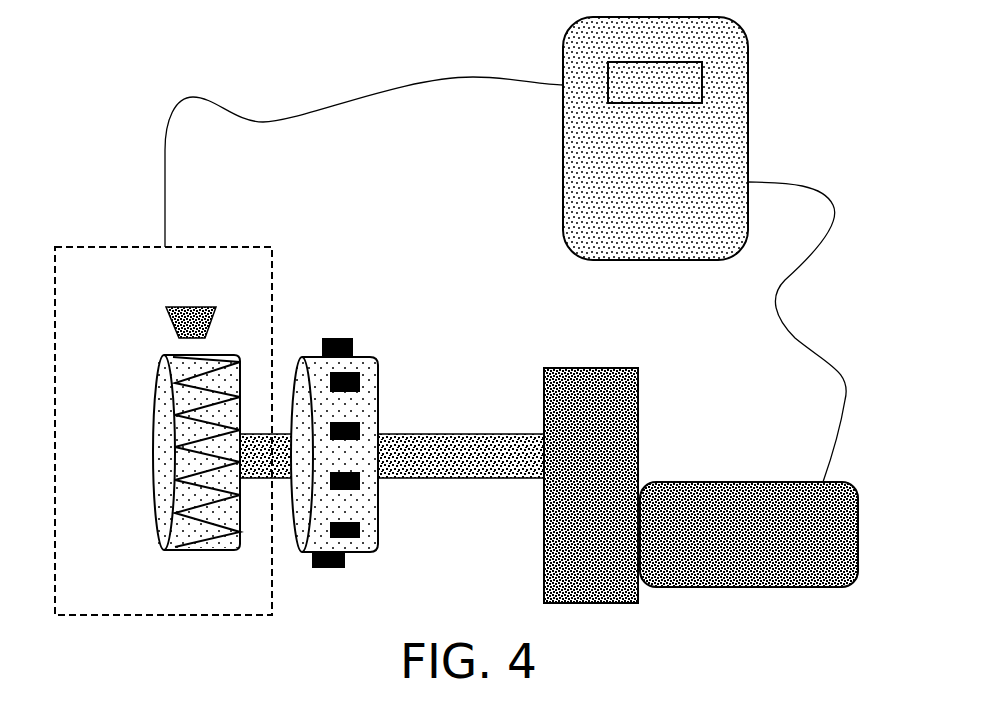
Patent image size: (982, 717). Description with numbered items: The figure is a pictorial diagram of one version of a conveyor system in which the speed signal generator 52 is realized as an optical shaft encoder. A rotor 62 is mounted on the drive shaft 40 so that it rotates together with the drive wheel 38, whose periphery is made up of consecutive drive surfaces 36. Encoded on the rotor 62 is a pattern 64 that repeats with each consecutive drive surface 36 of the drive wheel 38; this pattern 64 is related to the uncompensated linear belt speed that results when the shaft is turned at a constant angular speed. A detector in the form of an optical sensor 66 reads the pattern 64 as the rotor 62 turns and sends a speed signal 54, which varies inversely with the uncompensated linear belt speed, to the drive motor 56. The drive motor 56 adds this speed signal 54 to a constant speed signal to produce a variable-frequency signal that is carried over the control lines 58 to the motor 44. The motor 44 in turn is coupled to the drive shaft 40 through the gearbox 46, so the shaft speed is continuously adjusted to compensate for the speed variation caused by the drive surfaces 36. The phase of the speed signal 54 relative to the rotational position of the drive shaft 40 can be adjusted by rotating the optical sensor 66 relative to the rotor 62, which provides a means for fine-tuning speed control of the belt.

The drive surface 36 is at (345, 420).
The drive wheel 38 is at (365, 362).
The drive shaft 40 is at (422, 440).
The motor 44 is at (815, 590).
The gearbox 46 is at (597, 368).
The speed signal generator 52 is at (92, 617).
The speed signal 54 is at (167, 185).
The drive motor 56 is at (748, 113).
The control lines 58 is at (818, 338).
The rotor 62 is at (233, 548).
The pattern 64 is at (217, 358).
The optical sensor 66 is at (197, 305).